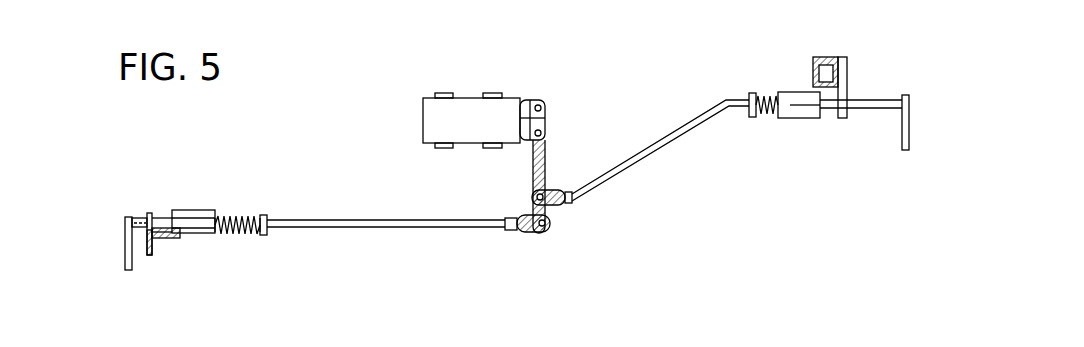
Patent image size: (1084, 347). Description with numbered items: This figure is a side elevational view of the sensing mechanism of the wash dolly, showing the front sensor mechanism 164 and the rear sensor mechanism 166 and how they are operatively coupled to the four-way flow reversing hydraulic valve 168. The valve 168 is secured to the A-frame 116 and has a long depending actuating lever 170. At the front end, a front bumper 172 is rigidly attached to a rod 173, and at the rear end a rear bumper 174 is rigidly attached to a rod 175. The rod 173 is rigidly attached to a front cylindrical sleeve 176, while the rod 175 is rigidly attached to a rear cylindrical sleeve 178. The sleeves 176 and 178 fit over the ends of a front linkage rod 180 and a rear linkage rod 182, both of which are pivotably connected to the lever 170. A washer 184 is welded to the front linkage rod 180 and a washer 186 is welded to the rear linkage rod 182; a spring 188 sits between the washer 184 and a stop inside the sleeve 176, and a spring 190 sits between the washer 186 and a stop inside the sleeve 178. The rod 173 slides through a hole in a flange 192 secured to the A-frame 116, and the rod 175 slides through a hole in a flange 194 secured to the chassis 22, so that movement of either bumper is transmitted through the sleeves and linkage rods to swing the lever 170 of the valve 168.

The chassis 22 is at (162, 238).
The A-frame 116 is at (827, 58).
The front sensor mechanism 164 is at (881, 72).
The rear sensor mechanism 166 is at (146, 186).
The four-way flow reversing hydraulic valve 168 is at (490, 131).
The actuating lever 170 is at (547, 168).
The front bumper 172 is at (909, 128).
The front rod 173 is at (877, 110).
The rear bumper 174 is at (124, 232).
The rear rod 175 is at (138, 216).
The front cylindrical sleeve 176 is at (807, 118).
The rear cylindrical sleeve 178 is at (193, 210).
The front linkage rod 180 is at (673, 139).
The rear linkage rod 182 is at (365, 220).
The washer 184 is at (748, 98).
The washer 186 is at (267, 217).
The spring 188 is at (764, 99).
The spring 190 is at (247, 216).
The flange 192 is at (845, 77).
The flange 194 is at (152, 210).